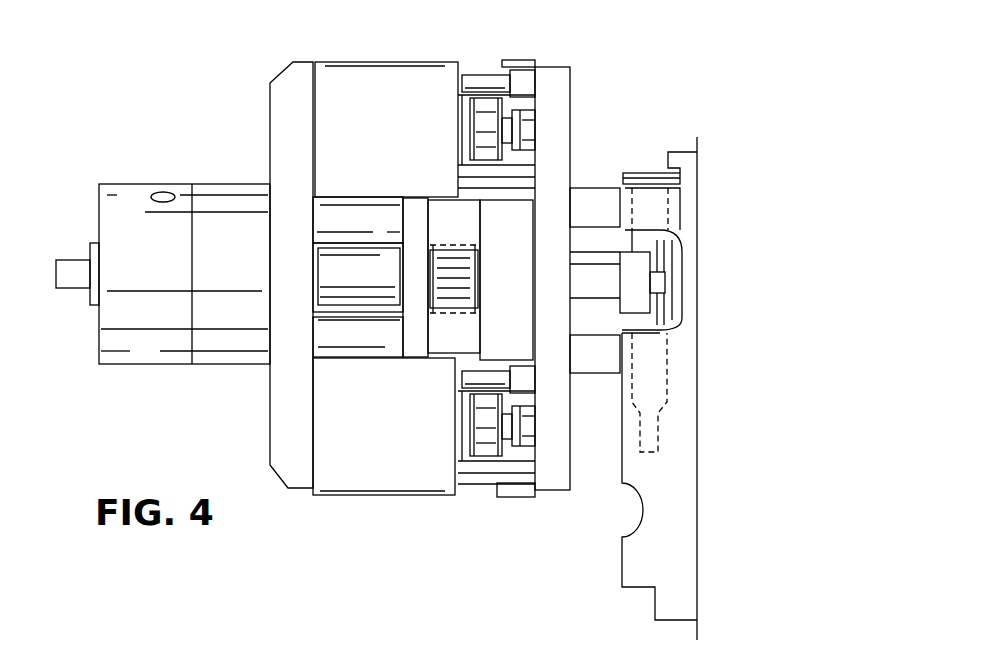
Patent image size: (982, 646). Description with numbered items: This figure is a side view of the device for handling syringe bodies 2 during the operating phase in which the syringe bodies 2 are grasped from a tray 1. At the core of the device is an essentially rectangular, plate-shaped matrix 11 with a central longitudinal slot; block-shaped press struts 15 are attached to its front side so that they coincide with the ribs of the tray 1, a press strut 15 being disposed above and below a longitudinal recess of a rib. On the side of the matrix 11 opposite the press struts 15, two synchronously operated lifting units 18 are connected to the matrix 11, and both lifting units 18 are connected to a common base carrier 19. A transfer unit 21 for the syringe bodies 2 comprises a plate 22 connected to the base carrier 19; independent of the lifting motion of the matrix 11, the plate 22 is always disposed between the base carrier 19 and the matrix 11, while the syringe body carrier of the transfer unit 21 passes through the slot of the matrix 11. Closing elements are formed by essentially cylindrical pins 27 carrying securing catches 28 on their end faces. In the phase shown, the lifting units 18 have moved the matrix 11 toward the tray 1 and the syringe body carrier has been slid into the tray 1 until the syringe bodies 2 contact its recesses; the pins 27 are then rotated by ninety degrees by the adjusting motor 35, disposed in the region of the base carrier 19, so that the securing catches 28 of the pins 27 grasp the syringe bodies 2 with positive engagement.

The tray 1 is at (683, 556).
The syringe body 2 is at (655, 217).
The matrix 11 is at (562, 92).
The press strut 15 is at (598, 205).
The lifting unit 18 is at (343, 77).
The base carrier 19 is at (279, 460).
The transfer unit 21 is at (677, 300).
The plate 22 is at (420, 347).
The pin 27 is at (717, 283).
The securing catch 28 is at (639, 296).
The adjusting motor 35 is at (138, 347).